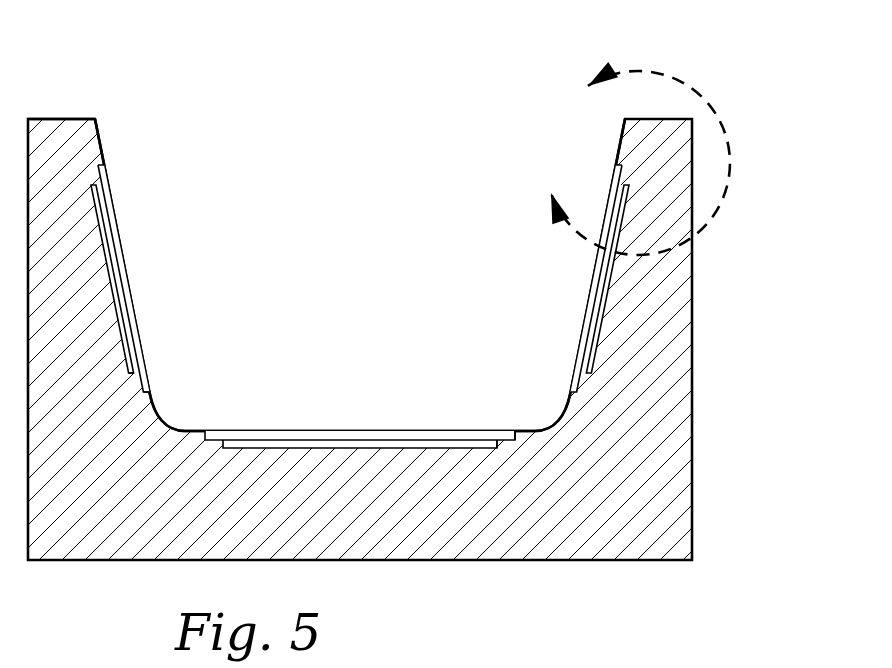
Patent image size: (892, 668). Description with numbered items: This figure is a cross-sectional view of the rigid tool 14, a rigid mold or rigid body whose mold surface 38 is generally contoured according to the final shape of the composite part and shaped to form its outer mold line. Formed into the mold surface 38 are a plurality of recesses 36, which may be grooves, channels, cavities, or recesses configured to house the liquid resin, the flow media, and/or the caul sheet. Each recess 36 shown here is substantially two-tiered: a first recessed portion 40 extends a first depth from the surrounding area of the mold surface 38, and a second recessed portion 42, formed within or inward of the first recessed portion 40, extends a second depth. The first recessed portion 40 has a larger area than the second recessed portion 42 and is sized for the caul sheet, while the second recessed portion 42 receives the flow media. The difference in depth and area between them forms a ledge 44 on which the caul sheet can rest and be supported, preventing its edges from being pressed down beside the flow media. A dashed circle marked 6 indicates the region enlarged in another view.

The rigid tool 14 is at (483, 87).
The recesses 36 is at (152, 270).
The mold surface 38 is at (97, 137).
The first recessed portion 40 is at (100, 172).
The second recessed portion 42 is at (97, 200).
The ledge 44 is at (134, 384).
The section view indicator FIG. 6 is at (640, 158).